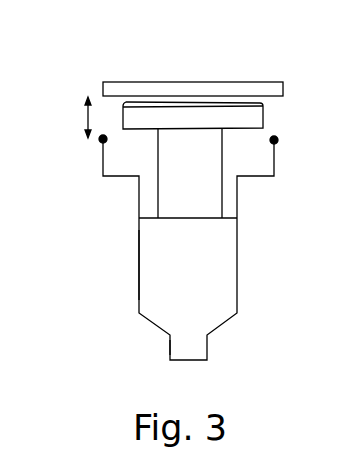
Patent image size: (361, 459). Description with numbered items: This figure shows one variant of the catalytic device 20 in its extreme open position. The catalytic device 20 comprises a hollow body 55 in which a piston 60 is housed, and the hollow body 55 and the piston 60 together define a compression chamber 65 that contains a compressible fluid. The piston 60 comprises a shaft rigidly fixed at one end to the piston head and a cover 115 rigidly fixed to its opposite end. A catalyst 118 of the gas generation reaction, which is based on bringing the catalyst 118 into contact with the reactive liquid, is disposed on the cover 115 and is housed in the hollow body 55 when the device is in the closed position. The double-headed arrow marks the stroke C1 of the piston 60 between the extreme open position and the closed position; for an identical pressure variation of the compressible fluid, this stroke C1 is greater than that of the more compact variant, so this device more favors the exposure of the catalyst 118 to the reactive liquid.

The catalytic device 20 is at (82, 187).
The hollow body 55 is at (239, 248).
The piston 60 is at (207, 187).
The compression chamber 65 is at (213, 315).
The cover 115 is at (237, 82).
The catalyst 118 is at (254, 115).
The stroke of the piston C1 is at (82, 110).